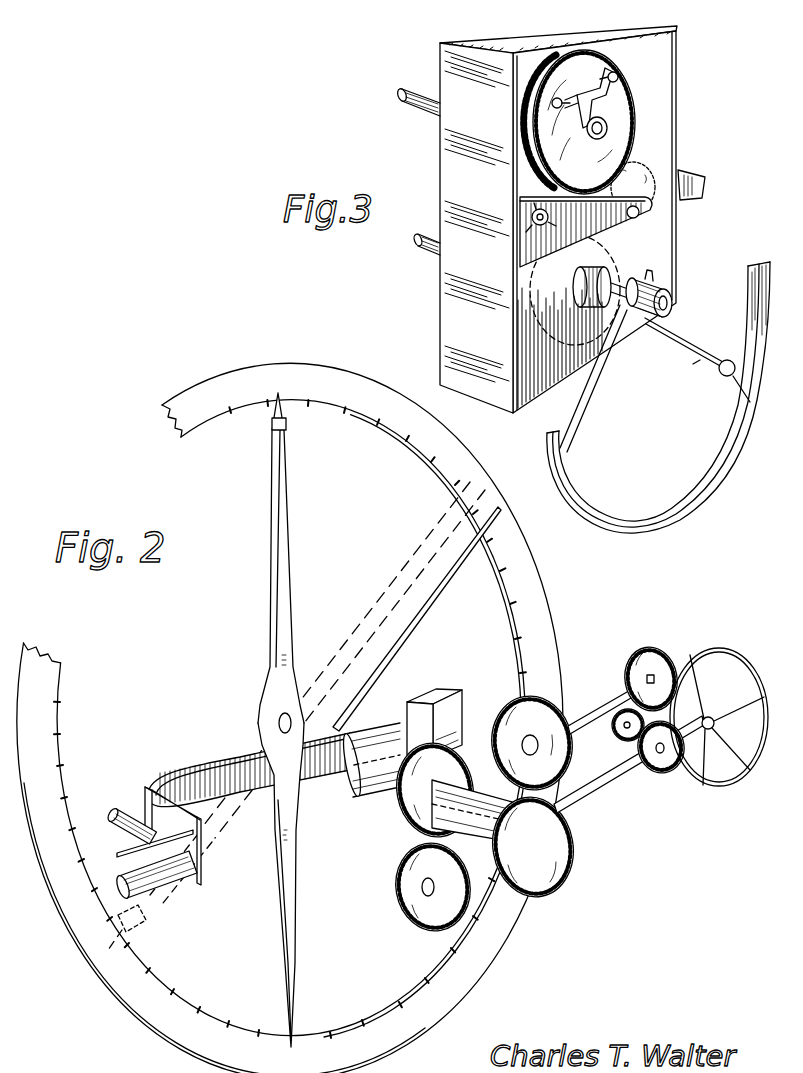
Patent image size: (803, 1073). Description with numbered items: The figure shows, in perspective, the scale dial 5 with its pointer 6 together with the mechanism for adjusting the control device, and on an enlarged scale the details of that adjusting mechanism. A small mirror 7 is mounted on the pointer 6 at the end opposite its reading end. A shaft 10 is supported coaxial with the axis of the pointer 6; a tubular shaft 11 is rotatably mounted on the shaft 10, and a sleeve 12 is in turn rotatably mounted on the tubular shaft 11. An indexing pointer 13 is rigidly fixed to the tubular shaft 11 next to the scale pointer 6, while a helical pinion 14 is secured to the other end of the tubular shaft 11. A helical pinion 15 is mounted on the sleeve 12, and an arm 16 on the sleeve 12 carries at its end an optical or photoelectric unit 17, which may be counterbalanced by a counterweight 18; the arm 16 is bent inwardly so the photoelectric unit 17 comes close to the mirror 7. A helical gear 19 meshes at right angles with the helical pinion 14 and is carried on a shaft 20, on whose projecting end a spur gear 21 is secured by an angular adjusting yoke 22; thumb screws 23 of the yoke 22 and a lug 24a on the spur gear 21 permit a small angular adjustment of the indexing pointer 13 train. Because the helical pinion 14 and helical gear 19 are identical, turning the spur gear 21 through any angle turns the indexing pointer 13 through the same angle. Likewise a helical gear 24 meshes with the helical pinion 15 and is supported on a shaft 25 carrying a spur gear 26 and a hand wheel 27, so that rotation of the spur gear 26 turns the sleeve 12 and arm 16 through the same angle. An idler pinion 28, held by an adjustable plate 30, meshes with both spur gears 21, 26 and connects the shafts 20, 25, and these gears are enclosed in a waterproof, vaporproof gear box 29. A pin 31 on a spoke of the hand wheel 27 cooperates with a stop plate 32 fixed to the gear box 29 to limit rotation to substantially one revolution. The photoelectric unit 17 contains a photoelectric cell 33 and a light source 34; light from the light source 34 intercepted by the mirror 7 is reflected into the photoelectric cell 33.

In FIG. 2, the scale dial 5 is at (50, 718).
In FIG. 2, the pointer 6 is at (293, 962).
In FIG. 2, the mirror 7 is at (272, 428).
In FIG. 2, the shaft 10 is at (563, 860).
In FIG. 2, the tubular shaft 11 is at (565, 820).
In FIG. 2, the sleeve 12 is at (370, 797).
In FIG. 2, the indexing pointer 13 is at (448, 597).
In FIG. 2, the helical pinion 14 is at (555, 883).
In FIG. 2, the helical pinion 15 is at (400, 827).
In FIG. 2, the arm 16 is at (310, 777).
In FIG. 2, the photoelectric unit 17 is at (195, 896).
In FIG. 2, the counterweight 18 is at (447, 707).
In FIG. 2, the helical gear 19 is at (517, 718).
In FIG. 3, the shaft 20 is at (423, 113).
In FIG. 2, the shaft 20 is at (585, 720).
In FIG. 3, the spur gear 21 is at (610, 152).
In FIG. 2, the spur gear 21 is at (657, 655).
In FIG. 3, the angular adjusting yoke 22 is at (605, 110).
In FIG. 3, the thumb screws 23 is at (610, 77).
In FIG. 2, the helical gear 24 is at (400, 913).
In FIG. 3, the lug 24a is at (573, 72).
In FIG. 3, the shaft 25 is at (627, 277).
In FIG. 2, the shaft 25 is at (617, 787).
In FIG. 3, the spur gear 26 is at (560, 384).
In FIG. 2, the spur gear 26 is at (660, 767).
In FIG. 3, the hand wheel 27 is at (600, 515).
In FIG. 2, the hand wheel 27 is at (745, 775).
In FIG. 3, the idler pinion 28 is at (640, 183).
In FIG. 2, the idler pinion 28 is at (620, 737).
In FIG. 3, the gear box 29 is at (460, 282).
In FIG. 3, the adjustable plate 30 is at (557, 198).
In FIG. 3, the pin 31 is at (697, 363).
In FIG. 3, the stop plate 32 is at (707, 184).
In FIG. 2, the photoelectric cell 33 is at (119, 808).
In FIG. 2, the light source 34 is at (128, 893).